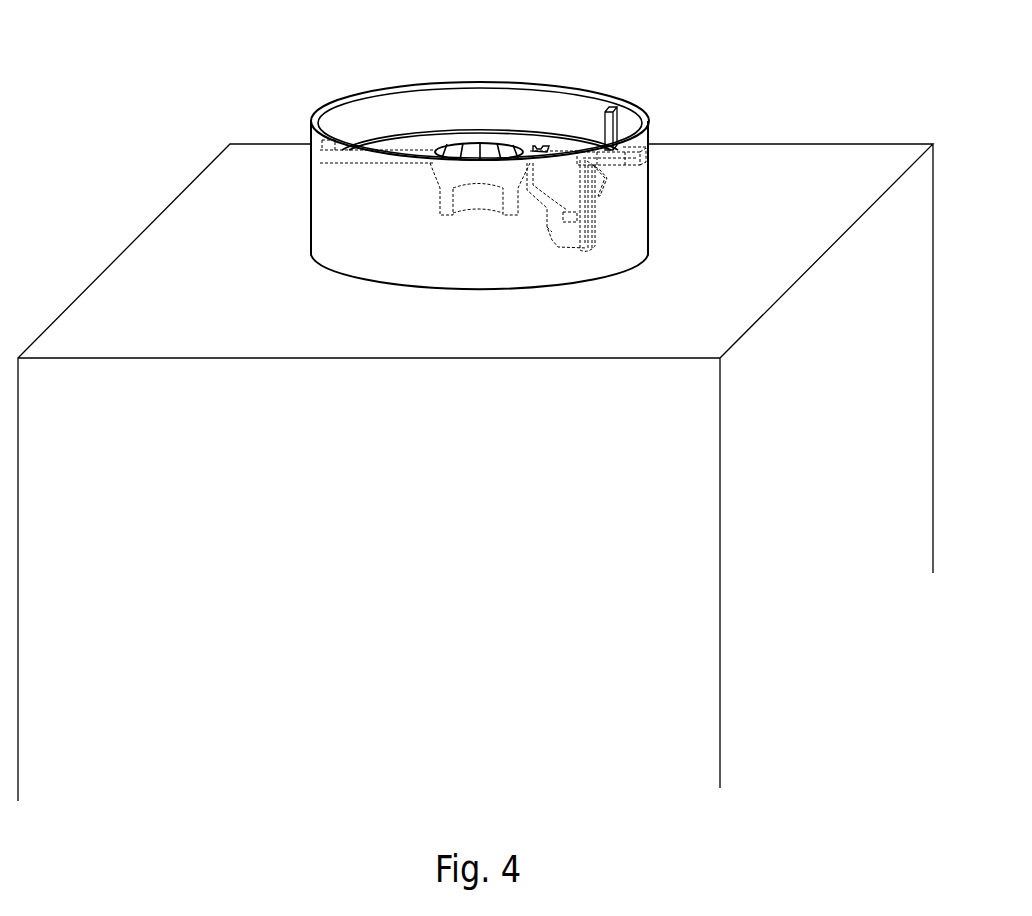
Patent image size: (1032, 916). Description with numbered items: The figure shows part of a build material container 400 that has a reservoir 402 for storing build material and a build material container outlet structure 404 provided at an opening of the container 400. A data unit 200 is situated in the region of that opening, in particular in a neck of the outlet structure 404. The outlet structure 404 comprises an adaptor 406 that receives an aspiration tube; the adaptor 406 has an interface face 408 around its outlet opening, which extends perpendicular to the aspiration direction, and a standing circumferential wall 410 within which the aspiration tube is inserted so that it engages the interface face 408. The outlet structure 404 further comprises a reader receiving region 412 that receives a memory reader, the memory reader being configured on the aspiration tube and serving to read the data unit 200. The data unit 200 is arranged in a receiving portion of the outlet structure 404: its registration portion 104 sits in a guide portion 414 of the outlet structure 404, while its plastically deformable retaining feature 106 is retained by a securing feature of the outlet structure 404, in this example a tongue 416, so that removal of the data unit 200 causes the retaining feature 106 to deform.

The build material container 400 is at (122, 106).
The reservoir 402 is at (265, 447).
The build material container outlet structure 404 is at (316, 113).
The adaptor 406 is at (373, 75).
The interface face 408 is at (452, 130).
The standing circumferential wall 410 is at (497, 104).
The reader receiving region 412 is at (553, 155).
The data unit 200 is at (618, 128).
The plastically deformable retaining feature 106 is at (620, 167).
The tongue 416 is at (600, 175).
The registration portion 104 is at (586, 218).
The guide portion 414 is at (587, 240).